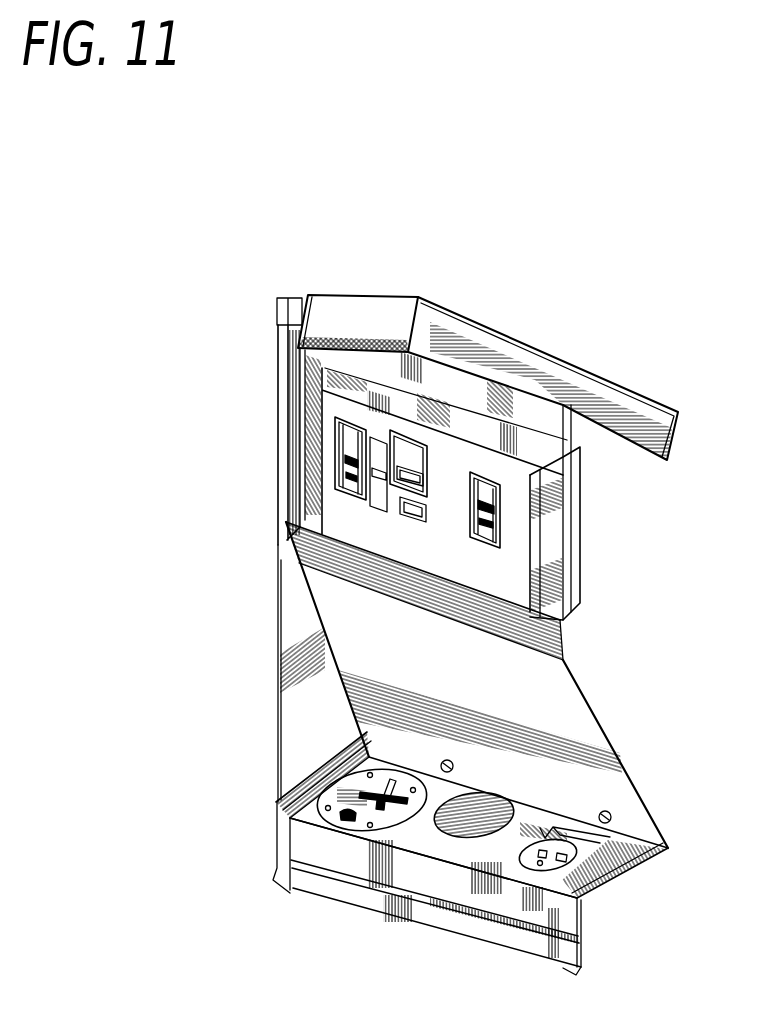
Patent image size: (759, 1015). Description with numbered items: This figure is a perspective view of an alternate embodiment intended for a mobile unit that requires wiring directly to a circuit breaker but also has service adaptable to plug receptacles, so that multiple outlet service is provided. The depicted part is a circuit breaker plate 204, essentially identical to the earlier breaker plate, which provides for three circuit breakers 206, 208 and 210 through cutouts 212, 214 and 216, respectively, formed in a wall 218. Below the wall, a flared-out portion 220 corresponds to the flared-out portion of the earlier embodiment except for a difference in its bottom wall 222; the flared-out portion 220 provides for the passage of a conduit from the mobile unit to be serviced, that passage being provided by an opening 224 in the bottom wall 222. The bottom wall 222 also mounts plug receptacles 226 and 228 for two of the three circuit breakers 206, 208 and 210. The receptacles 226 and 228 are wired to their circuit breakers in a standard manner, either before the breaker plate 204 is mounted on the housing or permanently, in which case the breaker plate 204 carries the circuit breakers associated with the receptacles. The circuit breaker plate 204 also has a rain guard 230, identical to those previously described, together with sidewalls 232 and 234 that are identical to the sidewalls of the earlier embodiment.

The circuit breaker plate 204 is at (647, 636).
The circuit breaker 206 is at (347, 472).
The circuit breaker 208 is at (407, 510).
The circuit breaker 210 is at (495, 548).
The cutout 212 is at (352, 495).
The cutout 214 is at (410, 440).
The cutout 216 is at (483, 493).
The wall 218 is at (522, 593).
The flared-out portion 220 is at (628, 782).
The bottom wall 222 is at (523, 823).
The opening 224 is at (467, 797).
The plug receptacle 226 is at (388, 777).
The plug receptacle 228 is at (603, 843).
The rain guard 230 is at (588, 470).
The sidewall 232 is at (278, 457).
The sidewall 234 is at (278, 753).